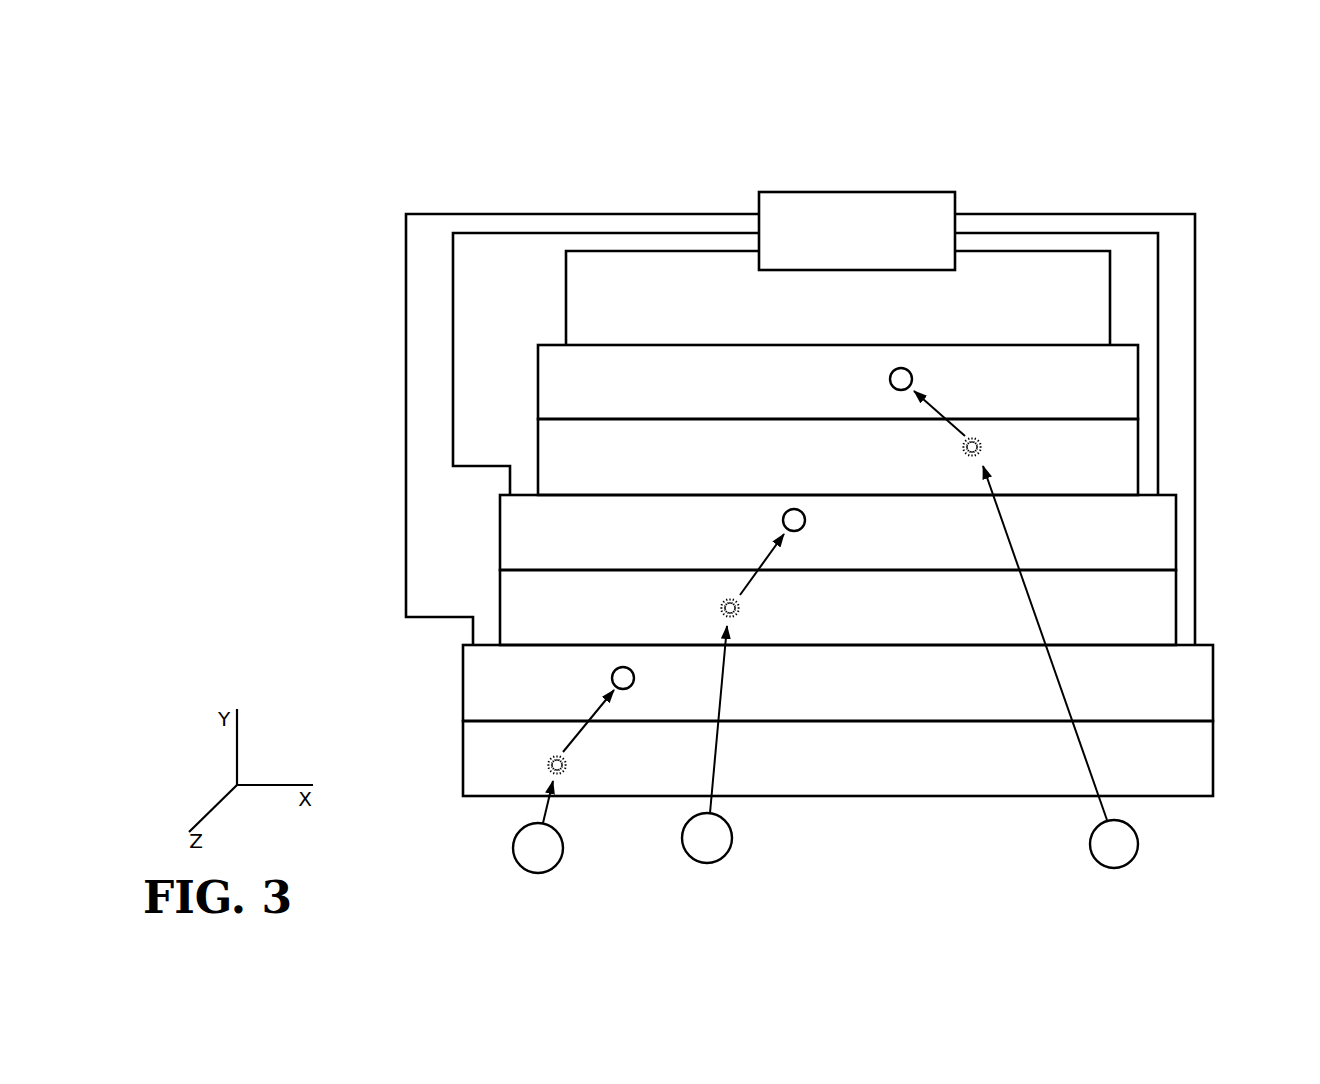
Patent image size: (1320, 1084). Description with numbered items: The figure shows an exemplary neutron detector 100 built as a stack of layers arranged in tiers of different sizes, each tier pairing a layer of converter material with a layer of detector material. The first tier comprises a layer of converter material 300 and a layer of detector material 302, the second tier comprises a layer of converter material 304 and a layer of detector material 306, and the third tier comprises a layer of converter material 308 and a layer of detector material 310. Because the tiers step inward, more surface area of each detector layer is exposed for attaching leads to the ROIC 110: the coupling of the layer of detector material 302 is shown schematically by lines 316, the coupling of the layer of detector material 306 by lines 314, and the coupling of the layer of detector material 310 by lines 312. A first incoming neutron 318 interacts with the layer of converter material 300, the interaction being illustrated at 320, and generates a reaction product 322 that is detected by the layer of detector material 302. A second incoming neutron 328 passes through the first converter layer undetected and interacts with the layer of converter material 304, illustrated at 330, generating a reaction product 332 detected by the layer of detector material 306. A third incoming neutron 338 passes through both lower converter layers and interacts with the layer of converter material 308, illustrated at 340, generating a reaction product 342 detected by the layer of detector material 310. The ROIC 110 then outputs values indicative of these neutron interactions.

The neutron detector 100 is at (255, 146).
The ROIC 110 is at (843, 190).
The layer of converter material 300 is at (463, 758).
The layer of detector material 302 is at (463, 683).
The layer of converter material 304 is at (500, 607).
The layer of detector material 306 is at (500, 542).
The layer of converter material 308 is at (537, 466).
The layer of detector material 310 is at (537, 400).
The lines 312 is at (641, 259).
The lines 314 is at (466, 259).
The lines 316 is at (396, 327).
The first incoming neutron 318 is at (574, 850).
The interaction 320 is at (539, 765).
The reaction product 322 is at (613, 660).
The second incoming neutron 328 is at (741, 840).
The interaction 330 is at (713, 604).
The reaction product 332 is at (778, 517).
The third incoming neutron 338 is at (1089, 844).
The interaction 340 is at (951, 448).
The reaction product 342 is at (886, 375).